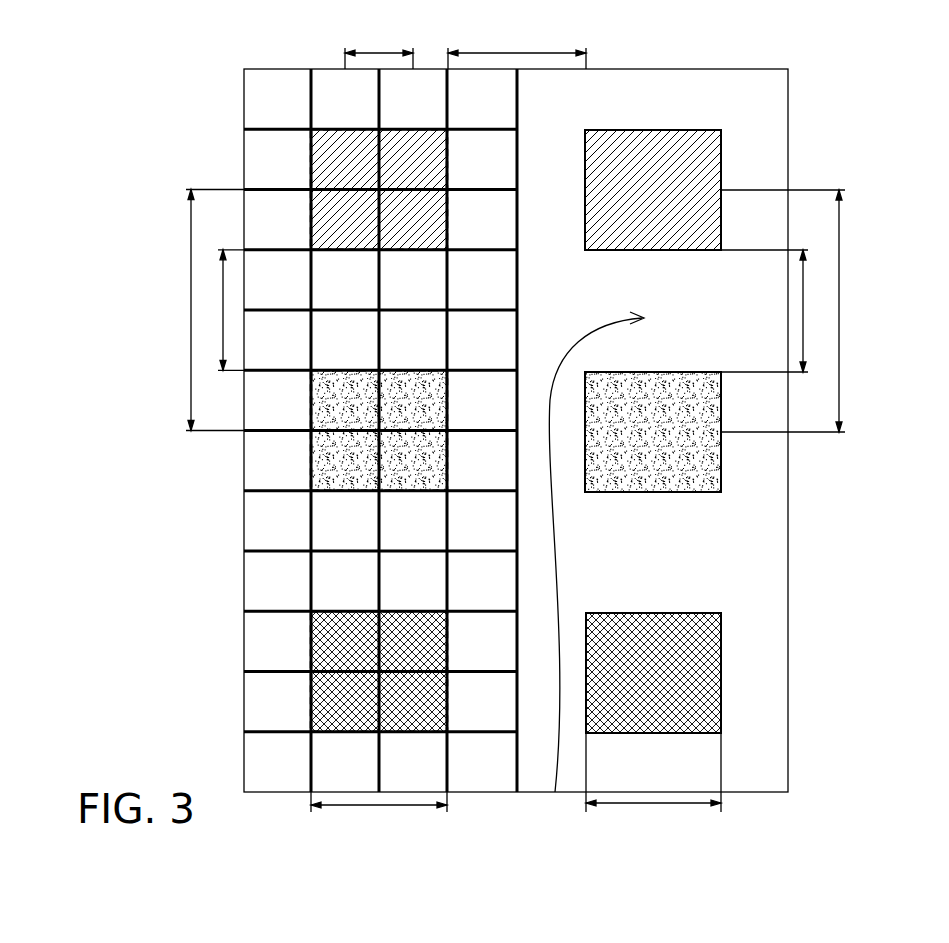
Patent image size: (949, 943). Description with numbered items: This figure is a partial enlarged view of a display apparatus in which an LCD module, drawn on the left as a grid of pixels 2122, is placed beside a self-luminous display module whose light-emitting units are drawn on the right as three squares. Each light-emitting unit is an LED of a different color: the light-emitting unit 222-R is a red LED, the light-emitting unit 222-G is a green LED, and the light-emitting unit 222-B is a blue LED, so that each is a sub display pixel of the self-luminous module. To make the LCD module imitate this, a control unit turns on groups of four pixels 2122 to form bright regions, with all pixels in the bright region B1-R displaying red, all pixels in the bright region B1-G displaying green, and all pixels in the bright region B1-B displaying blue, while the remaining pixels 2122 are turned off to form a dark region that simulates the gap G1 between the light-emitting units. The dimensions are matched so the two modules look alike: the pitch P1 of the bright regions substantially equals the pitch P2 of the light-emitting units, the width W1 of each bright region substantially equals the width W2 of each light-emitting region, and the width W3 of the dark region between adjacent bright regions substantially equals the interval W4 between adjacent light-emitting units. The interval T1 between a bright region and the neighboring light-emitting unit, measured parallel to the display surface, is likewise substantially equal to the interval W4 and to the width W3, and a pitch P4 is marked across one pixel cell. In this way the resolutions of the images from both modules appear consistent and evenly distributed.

The pixel 2122 is at (282, 91).
The bright region B1-R is at (311, 134).
The bright region B1-G is at (311, 467).
The bright region B1-B is at (311, 636).
The light-emitting unit 222-R is at (712, 157).
The light-emitting unit 222-G is at (712, 463).
The light-emitting unit 222-B is at (712, 703).
The gap G1 is at (593, 575).
The pitch of the bright regions P1 is at (203, 310).
The pitch of the light-emitting units P2 is at (794, 311).
The pitch of sub-pixel cells P4 is at (379, 45).
The interval T1 is at (517, 45).
The width of each bright region W1 is at (379, 818).
The width of a light-emitting region W2 is at (653, 785).
The width of the dark region W3 is at (219, 310).
The interval W4 is at (776, 311).